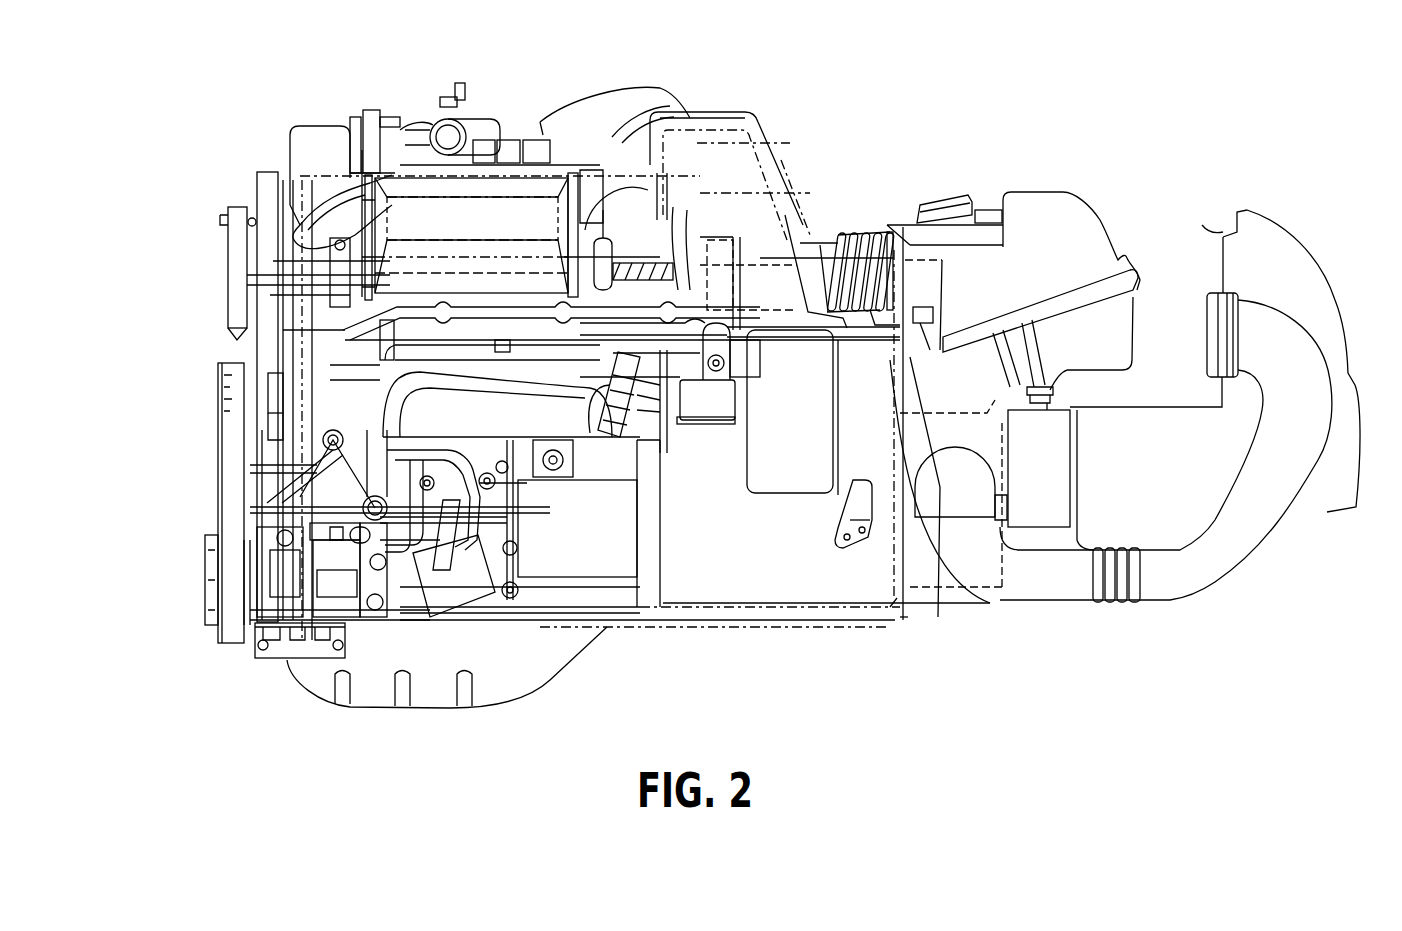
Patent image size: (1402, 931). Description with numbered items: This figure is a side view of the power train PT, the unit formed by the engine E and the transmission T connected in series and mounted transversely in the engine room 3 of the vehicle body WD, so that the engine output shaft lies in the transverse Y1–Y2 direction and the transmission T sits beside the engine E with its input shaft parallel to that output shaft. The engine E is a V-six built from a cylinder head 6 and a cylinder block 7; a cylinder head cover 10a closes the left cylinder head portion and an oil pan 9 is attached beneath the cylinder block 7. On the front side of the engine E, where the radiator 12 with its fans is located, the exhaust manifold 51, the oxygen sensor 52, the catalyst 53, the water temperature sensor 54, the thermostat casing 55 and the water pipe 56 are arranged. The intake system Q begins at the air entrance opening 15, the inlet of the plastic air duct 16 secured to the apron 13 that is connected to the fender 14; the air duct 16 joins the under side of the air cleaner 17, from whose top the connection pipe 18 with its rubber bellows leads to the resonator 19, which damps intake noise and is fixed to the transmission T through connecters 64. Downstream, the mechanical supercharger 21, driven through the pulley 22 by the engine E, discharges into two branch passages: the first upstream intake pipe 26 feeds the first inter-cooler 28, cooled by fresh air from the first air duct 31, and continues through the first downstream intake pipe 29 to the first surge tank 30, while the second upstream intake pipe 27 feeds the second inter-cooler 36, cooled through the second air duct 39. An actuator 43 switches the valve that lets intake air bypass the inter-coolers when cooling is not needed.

The cylinder head 6 is at (278, 157).
The first upstream intake pipe 26 is at (296, 138).
The first inter-cooler 28 is at (372, 203).
The pulley 22 is at (250, 325).
The mechanical supercharger 21 is at (287, 303).
The cylinder head cover 10a is at (337, 347).
The first air duct 31 is at (383, 135).
The actuator 43 is at (466, 118).
The first surge tank 30 is at (520, 140).
The first downstream intake pipe 29 is at (628, 212).
The second upstream intake pipe 27 is at (596, 102).
The second inter-cooler 36 is at (708, 132).
The second air duct 39 is at (781, 160).
The resonator 19 is at (820, 230).
The connection pipe 18 is at (873, 227).
The air cleaner 17 is at (1103, 220).
The power train PT is at (985, 199).
The engine E is at (830, 143).
The engine room 3 is at (1091, 151).
The vehicle body WD is at (1207, 152).
The transverse direction Y1 is at (1065, 83).
The transverse direction Y2 is at (1085, 85).
The fender 14 is at (1290, 232).
The air entrance opening 15 is at (1207, 307).
The air duct 16 is at (1277, 547).
The apron 13 is at (1087, 430).
The transmission T is at (950, 583).
The intake system Q is at (1063, 610).
The radiator 12 is at (823, 623).
The oil pan 9 is at (540, 673).
The cylinder block 7 is at (663, 543).
The catalyst 53 is at (612, 553).
The exhaust manifold 51 is at (600, 412).
The oxygen sensor 52 is at (637, 393).
The water temperature sensor 54 is at (730, 397).
The thermostat casing 55 is at (712, 405).
The water pipe 56 is at (730, 363).
The connecters 64 is at (850, 522).